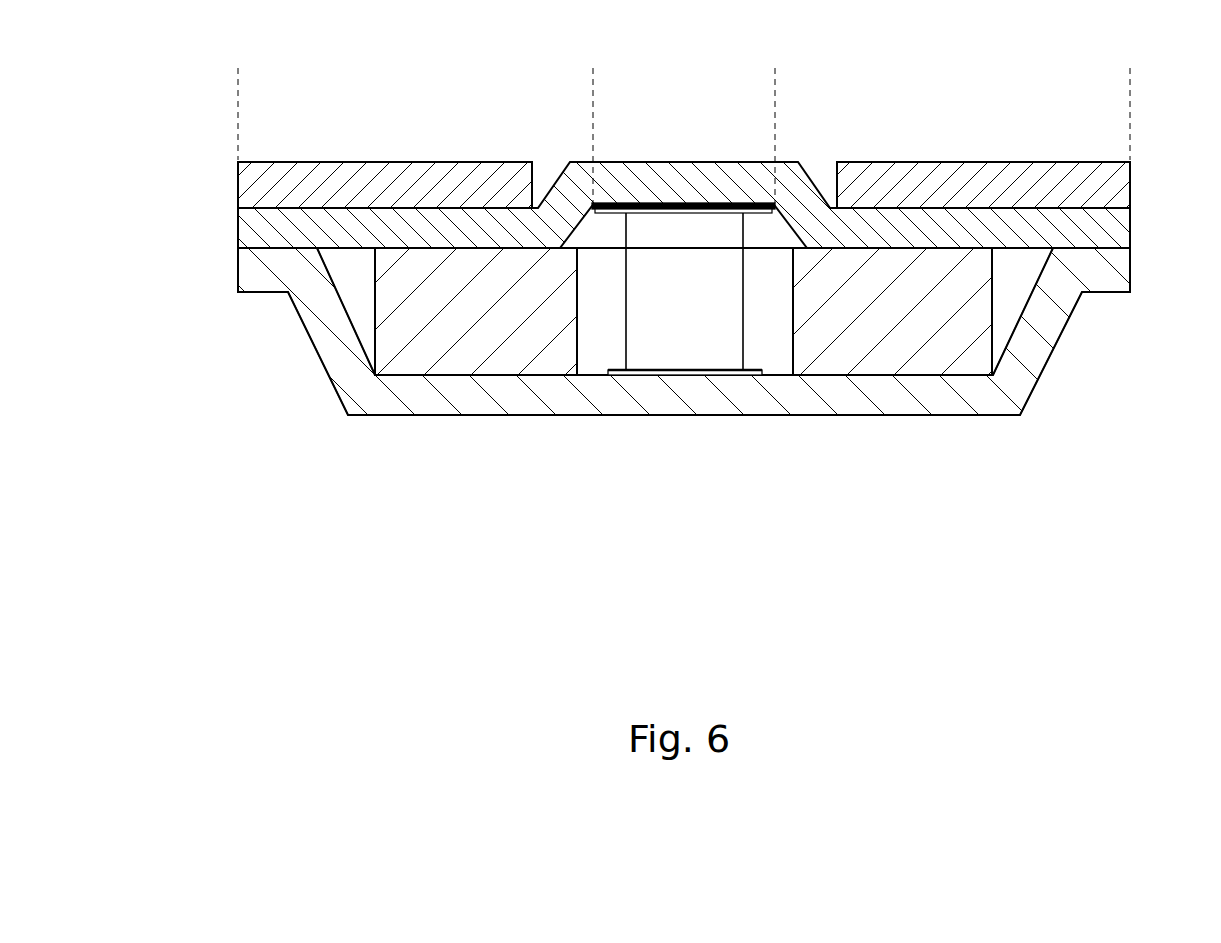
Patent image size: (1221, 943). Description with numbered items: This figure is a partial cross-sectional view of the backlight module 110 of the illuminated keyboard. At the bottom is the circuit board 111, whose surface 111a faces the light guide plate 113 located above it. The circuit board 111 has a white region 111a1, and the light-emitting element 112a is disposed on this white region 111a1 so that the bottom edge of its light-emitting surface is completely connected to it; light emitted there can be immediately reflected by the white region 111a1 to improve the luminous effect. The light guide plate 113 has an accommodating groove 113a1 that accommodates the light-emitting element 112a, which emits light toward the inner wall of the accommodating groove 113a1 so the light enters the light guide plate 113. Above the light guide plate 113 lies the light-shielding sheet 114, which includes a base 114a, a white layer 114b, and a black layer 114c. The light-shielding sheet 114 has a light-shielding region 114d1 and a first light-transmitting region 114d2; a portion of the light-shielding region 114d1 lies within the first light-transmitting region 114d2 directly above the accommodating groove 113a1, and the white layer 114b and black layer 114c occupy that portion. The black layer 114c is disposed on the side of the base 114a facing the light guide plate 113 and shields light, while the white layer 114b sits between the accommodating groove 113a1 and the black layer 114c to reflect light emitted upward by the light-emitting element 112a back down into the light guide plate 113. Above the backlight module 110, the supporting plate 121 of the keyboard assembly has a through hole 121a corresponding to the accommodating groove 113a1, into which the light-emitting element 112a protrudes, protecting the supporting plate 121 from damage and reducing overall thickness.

The backlight module 110 is at (664, 308).
The circuit board 111 is at (1118, 267).
The surface 111a is at (770, 374).
The white region 111a1 is at (693, 374).
The light-emitting element 112a is at (652, 343).
The light guide plate 113 is at (888, 354).
The accommodating groove 113a1 is at (593, 368).
The light-shielding sheet 114 is at (664, 349).
The base 114a is at (1118, 228).
The white layer 114b is at (722, 209).
The black layer 114c is at (653, 203).
The light-shielding region 114d1 is at (593, 68).
The first light-transmitting region 114d2 is at (593, 68).
The supporting plate 121 is at (1120, 183).
The through hole 121a is at (538, 152).